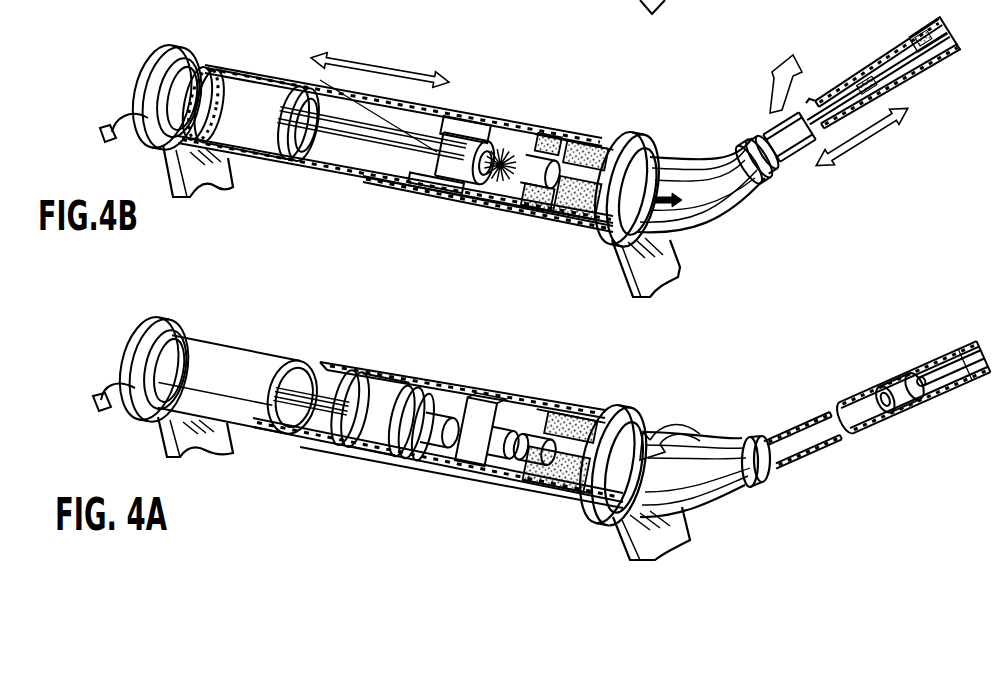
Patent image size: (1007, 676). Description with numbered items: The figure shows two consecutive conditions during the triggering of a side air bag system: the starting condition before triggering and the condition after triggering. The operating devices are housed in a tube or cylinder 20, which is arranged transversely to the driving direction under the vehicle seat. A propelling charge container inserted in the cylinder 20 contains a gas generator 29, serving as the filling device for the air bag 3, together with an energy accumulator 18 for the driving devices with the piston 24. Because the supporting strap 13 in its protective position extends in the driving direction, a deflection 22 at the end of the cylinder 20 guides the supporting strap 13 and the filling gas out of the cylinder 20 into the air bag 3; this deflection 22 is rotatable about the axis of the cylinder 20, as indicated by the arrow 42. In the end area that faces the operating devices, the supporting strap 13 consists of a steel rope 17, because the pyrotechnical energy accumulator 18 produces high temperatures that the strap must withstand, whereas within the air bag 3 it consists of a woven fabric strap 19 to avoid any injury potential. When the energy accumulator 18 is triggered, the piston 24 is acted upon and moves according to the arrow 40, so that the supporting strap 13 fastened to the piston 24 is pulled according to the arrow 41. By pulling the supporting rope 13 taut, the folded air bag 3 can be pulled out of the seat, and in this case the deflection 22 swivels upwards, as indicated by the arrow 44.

In FIG. 4B, the air bag 3 is at (863, 72).
In FIG. 4A, the air bag 3 is at (873, 392).
In FIG. 4A, the supporting strap 13 is at (882, 425).
In FIG. 4B, the steel rope 17 is at (804, 160).
In FIG. 4A, the steel rope 17 is at (808, 415).
In FIG. 4B, the energy accumulator 18 is at (456, 147).
In FIG. 4A, the energy accumulator 18 is at (455, 407).
In FIG. 4B, the woven fabric strap 19 is at (927, 48).
In FIG. 4A, the woven fabric strap 19 is at (946, 370).
In FIG. 4B, the cylinder 20 is at (318, 178).
In FIG. 4A, the cylinder 20 is at (218, 345).
In FIG. 4B, the deflection 22 is at (700, 224).
In FIG. 4A, the deflection 22 is at (700, 506).
In FIG. 4B, the piston 24 is at (242, 88).
In FIG. 4A, the piston 24 is at (352, 385).
In FIG. 4B, the gas generator 29 is at (577, 140).
In FIG. 4A, the gas generator 29 is at (570, 405).
In FIG. 4B, the arrow 40 is at (381, 65).
In FIG. 4B, the arrow 41 is at (893, 126).
In FIG. 4A, the arrow 42 is at (676, 428).
In FIG. 4B, the arrow 44 is at (757, 82).